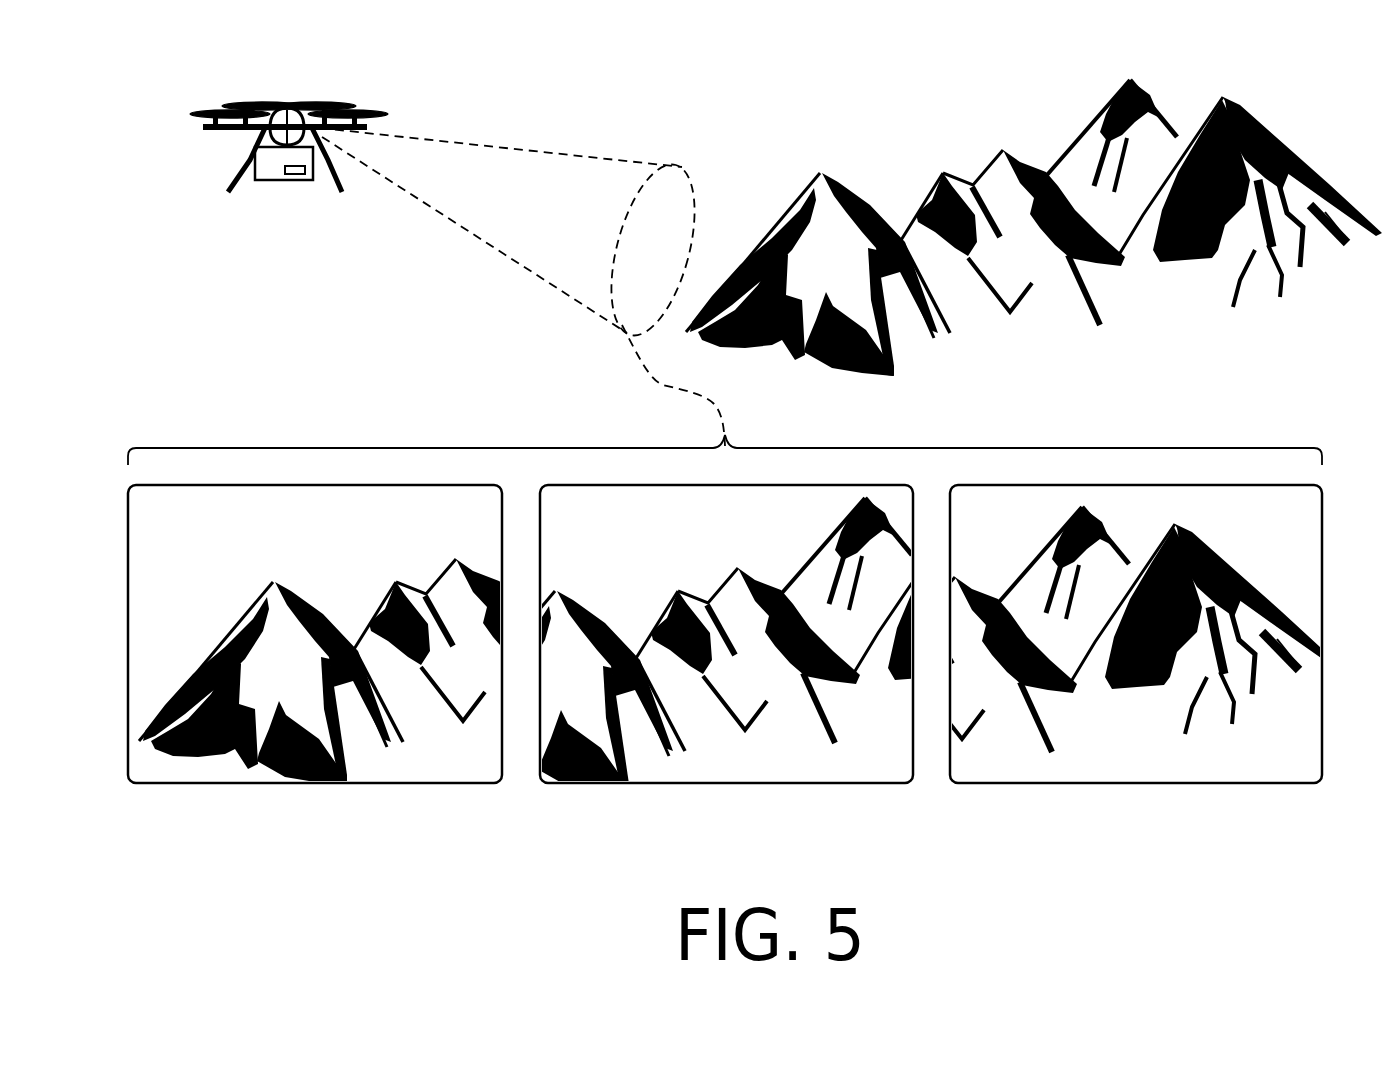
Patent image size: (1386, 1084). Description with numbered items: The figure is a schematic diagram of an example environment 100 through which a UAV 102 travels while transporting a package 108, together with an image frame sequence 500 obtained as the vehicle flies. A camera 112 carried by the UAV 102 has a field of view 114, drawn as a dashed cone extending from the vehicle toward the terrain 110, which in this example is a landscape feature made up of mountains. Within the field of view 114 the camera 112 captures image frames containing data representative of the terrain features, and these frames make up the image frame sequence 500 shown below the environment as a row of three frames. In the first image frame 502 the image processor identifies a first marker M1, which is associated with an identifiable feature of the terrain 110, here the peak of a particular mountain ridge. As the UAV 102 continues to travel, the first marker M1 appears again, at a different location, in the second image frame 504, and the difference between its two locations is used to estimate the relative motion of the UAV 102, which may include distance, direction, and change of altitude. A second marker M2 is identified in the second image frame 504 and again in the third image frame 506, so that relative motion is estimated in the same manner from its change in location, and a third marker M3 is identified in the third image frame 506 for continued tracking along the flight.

The environment 100 is at (1034, 210).
The UAV 102 is at (254, 146).
The package 108 is at (257, 182).
The terrain 110 is at (1034, 210).
The camera 112 is at (307, 182).
The field of view 114 is at (495, 132).
The image frame sequence 500 is at (467, 440).
The first image frame 502 is at (258, 558).
The second image frame 504 is at (560, 582).
The third image frame 506 is at (1083, 508).
The first marker M1 is at (808, 170).
The second marker M2 is at (1120, 80).
The third marker M3 is at (1226, 88).